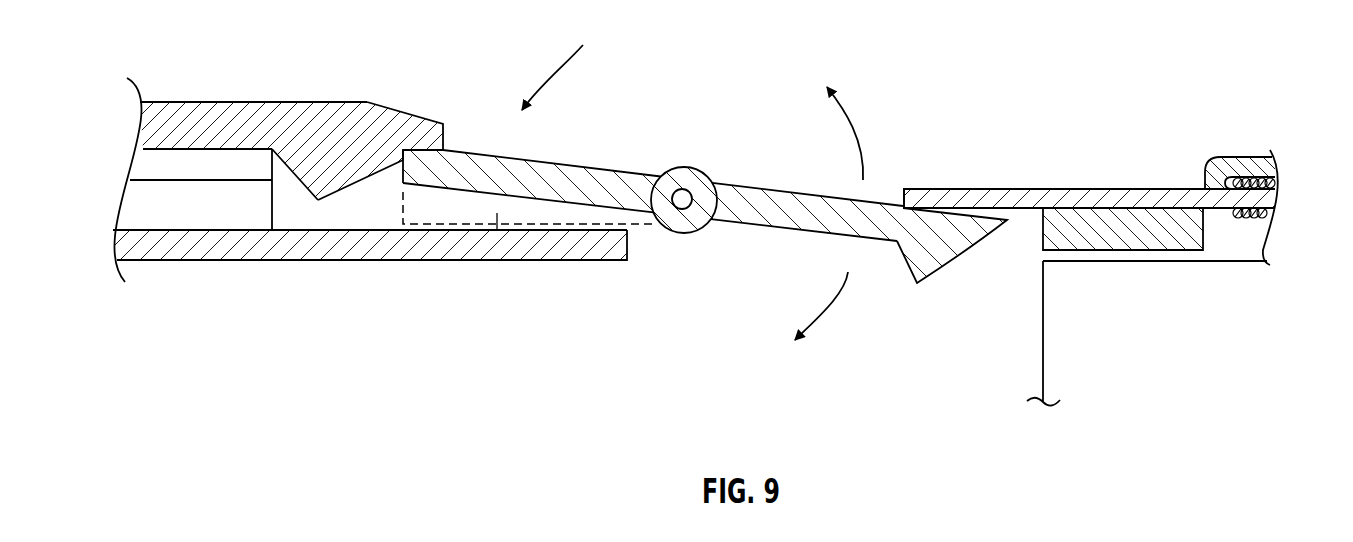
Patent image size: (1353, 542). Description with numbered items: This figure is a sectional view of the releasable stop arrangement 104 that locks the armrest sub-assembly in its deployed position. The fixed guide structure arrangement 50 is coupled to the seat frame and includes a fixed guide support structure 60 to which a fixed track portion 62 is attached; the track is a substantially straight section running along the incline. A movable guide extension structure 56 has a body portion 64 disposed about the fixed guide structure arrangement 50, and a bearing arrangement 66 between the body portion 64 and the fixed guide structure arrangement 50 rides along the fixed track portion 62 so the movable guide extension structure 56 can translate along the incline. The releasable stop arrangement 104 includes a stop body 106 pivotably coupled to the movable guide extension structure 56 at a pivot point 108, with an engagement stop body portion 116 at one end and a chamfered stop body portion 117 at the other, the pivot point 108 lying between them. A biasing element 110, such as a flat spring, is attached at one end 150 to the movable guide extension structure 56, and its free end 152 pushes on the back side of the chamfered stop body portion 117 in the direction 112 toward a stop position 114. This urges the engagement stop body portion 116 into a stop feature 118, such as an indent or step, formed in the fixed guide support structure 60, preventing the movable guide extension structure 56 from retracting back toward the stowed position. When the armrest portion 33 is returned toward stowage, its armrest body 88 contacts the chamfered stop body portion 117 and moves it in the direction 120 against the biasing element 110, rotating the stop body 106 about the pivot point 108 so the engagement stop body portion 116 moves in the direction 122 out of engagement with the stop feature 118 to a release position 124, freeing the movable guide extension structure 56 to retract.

The armrest portion 33 is at (1106, 333).
The fixed guide structure arrangement 50 is at (325, 101).
The movable guide extension structure 56 is at (412, 253).
The fixed guide support structure 60 is at (363, 108).
The fixed track portion 62 is at (140, 173).
The body portion 64 is at (223, 253).
The bearing arrangement 66 is at (123, 217).
The armrest body 88 is at (1159, 268).
The releasable stop arrangement 104 is at (717, 298).
The stop body 106 is at (583, 177).
The pivot point 108 is at (680, 200).
The biasing element 110 is at (985, 189).
The direction 112 is at (827, 310).
The stop position 114 is at (477, 148).
The engagement stop body portion 116 is at (442, 167).
The chamfered stop body portion 117 is at (945, 262).
The stop feature 118 is at (420, 122).
The direction 120 is at (855, 137).
The direction 122 is at (553, 77).
The release position 124 is at (472, 262).
The end 150 is at (1270, 197).
The free end 152 is at (920, 189).